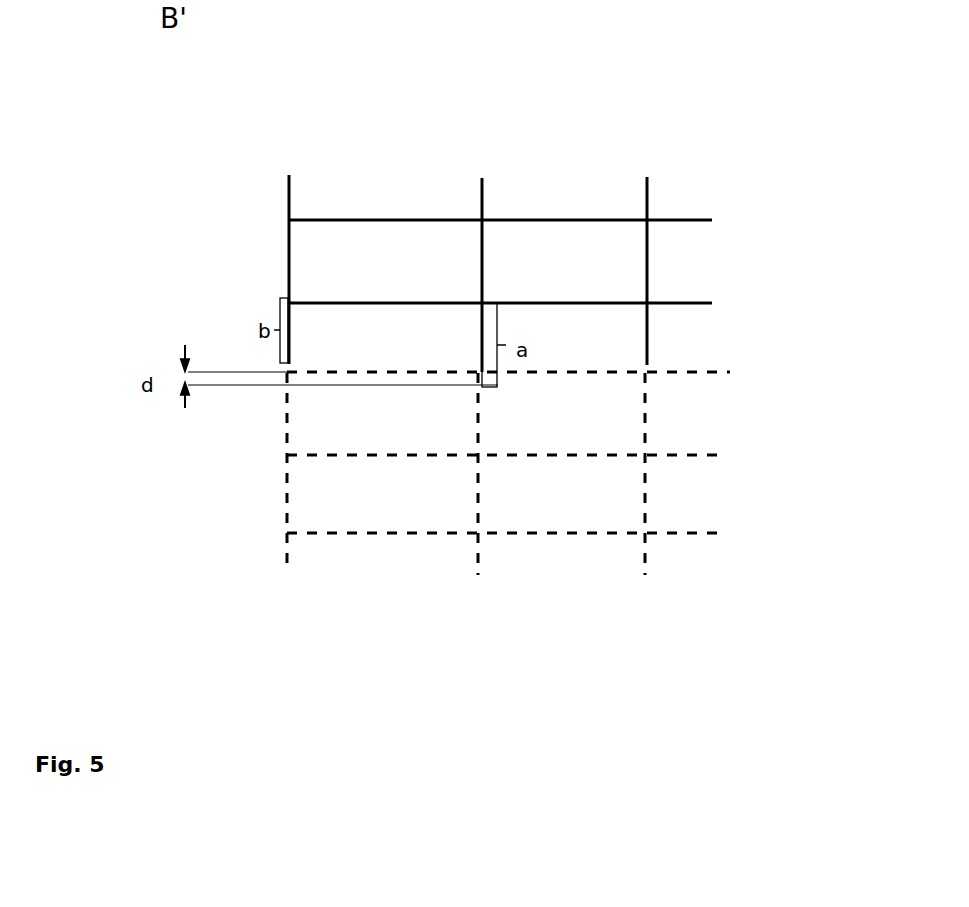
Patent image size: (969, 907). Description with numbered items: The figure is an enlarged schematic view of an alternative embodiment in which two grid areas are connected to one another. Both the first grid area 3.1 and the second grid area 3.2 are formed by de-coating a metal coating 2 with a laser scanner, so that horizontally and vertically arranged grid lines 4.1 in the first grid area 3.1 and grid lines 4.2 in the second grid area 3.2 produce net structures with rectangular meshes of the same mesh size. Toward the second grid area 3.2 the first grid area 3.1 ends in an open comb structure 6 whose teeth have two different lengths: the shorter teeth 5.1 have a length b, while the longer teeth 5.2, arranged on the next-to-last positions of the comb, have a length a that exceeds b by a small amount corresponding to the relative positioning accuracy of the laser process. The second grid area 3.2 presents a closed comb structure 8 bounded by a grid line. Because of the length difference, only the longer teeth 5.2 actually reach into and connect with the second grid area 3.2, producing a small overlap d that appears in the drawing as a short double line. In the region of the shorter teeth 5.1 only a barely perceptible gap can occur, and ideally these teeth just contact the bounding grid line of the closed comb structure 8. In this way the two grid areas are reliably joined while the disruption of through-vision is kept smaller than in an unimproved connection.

The metal coating 2 is at (604, 247).
The first grid area 3.1 is at (275, 273).
The second grid area 3.2 is at (246, 556).
The grid lines of first grid area 4.1 is at (323, 206).
The grid lines of second grid area 4.2 is at (407, 544).
The teeth with length b 5.1 is at (304, 316).
The teeth with length a 5.2 is at (477, 314).
The open comb structure 6 is at (704, 352).
The closed comb structure 8 is at (704, 405).